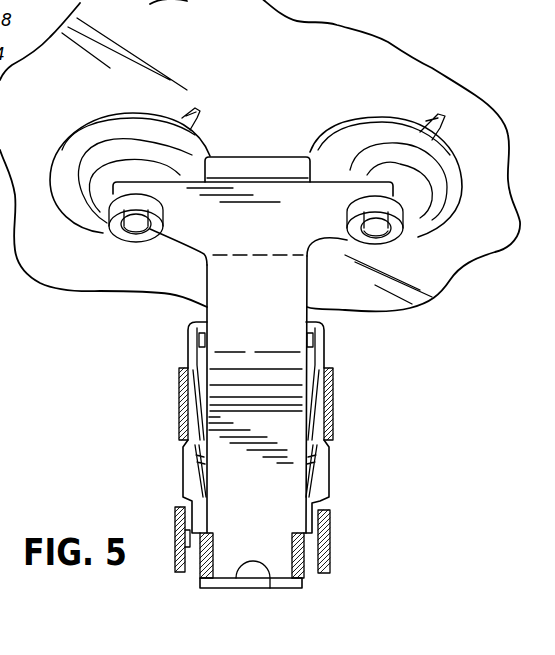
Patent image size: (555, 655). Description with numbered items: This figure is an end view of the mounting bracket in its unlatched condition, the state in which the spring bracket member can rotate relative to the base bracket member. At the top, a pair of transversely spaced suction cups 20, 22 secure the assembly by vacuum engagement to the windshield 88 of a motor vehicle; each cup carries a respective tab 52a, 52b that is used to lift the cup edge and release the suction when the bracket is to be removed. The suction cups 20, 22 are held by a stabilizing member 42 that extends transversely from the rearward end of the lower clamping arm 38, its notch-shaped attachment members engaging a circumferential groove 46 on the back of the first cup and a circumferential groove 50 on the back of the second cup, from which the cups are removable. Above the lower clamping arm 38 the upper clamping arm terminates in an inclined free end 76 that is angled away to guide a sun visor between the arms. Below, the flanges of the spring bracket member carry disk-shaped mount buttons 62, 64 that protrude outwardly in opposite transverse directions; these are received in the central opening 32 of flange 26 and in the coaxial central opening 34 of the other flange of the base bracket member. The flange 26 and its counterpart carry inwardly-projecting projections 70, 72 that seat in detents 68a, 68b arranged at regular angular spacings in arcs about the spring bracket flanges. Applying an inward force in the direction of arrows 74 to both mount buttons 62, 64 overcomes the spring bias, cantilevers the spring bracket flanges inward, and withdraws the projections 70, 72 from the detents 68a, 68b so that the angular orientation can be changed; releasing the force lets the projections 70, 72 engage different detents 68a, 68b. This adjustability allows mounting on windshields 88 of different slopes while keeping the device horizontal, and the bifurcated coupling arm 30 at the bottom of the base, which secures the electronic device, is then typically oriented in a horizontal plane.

The windshield 88 is at (250, 40).
The suction cup 20 is at (76, 129).
The suction cup 22 is at (335, 122).
The tab 52a is at (187, 117).
The tab 52b is at (427, 117).
The inclined free end 76 is at (238, 153).
The stabilizing member 42 is at (322, 220).
The circumferential groove 46 is at (176, 226).
The circumferential groove 50 is at (400, 229).
The lower clamping arm 38 is at (297, 305).
The flange 26 is at (179, 378).
The central opening 34 is at (333, 440).
The central opening 32 is at (181, 441).
The mount button 62 is at (178, 488).
The mount button 64 is at (327, 497).
The arrows 74 is at (172, 472).
The projection 70 is at (188, 547).
The projection 72 is at (317, 550).
The detents 68a is at (212, 540).
The detents 68b is at (293, 540).
The bifurcated coupling arm 30 is at (283, 588).